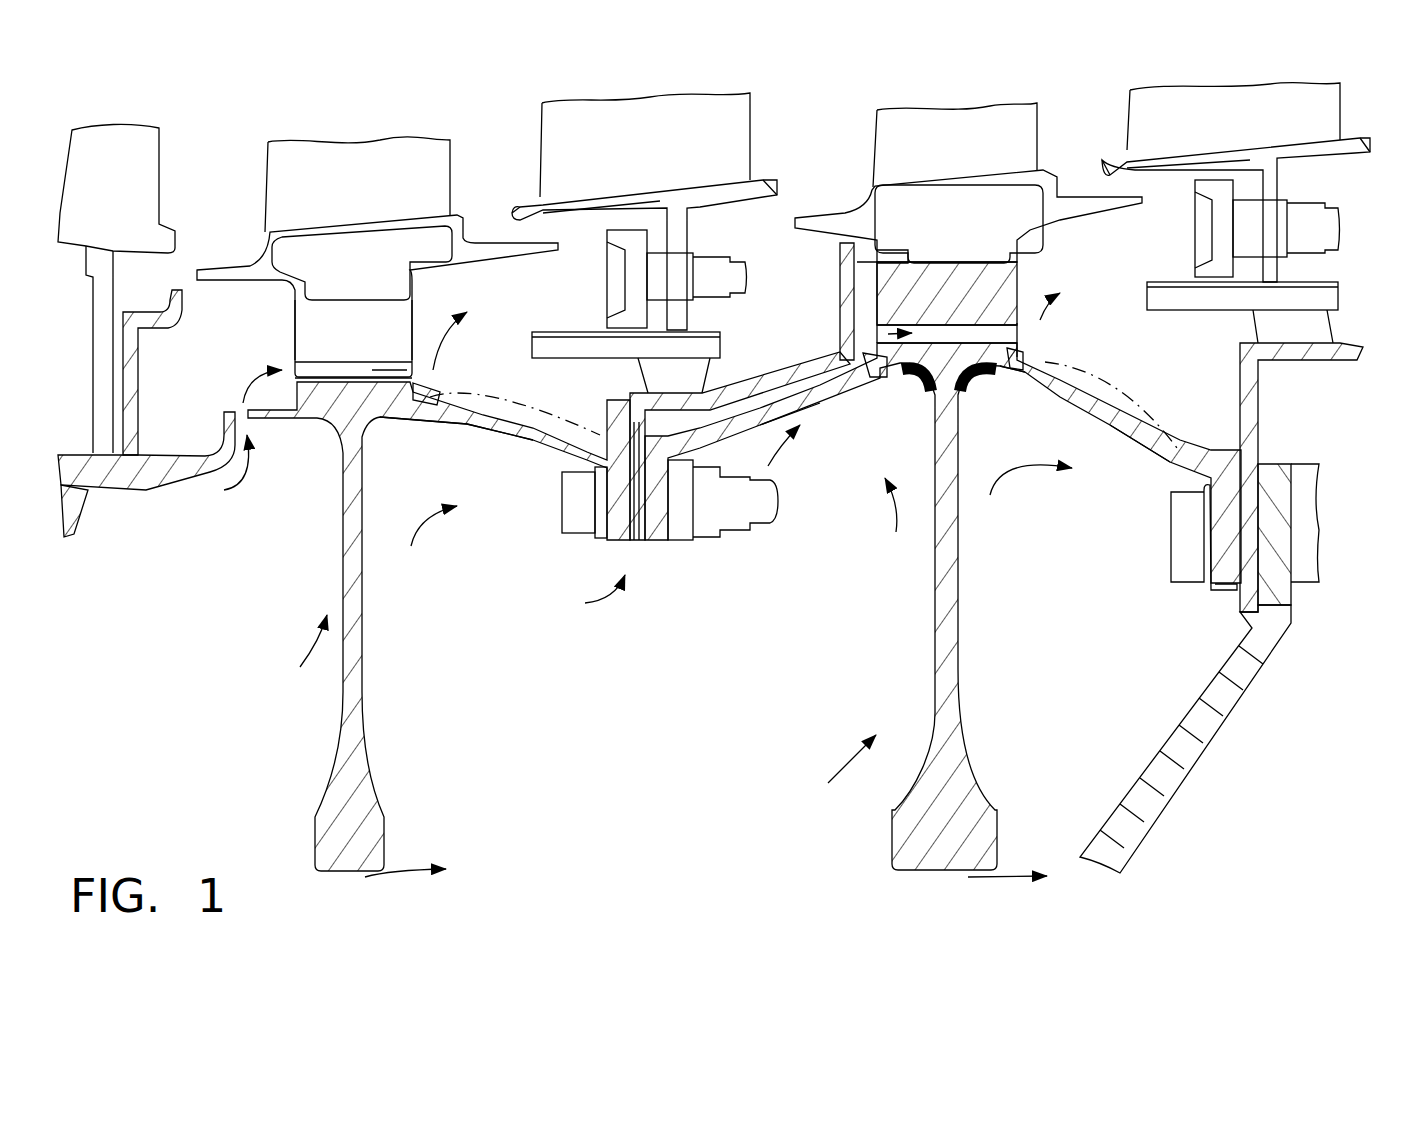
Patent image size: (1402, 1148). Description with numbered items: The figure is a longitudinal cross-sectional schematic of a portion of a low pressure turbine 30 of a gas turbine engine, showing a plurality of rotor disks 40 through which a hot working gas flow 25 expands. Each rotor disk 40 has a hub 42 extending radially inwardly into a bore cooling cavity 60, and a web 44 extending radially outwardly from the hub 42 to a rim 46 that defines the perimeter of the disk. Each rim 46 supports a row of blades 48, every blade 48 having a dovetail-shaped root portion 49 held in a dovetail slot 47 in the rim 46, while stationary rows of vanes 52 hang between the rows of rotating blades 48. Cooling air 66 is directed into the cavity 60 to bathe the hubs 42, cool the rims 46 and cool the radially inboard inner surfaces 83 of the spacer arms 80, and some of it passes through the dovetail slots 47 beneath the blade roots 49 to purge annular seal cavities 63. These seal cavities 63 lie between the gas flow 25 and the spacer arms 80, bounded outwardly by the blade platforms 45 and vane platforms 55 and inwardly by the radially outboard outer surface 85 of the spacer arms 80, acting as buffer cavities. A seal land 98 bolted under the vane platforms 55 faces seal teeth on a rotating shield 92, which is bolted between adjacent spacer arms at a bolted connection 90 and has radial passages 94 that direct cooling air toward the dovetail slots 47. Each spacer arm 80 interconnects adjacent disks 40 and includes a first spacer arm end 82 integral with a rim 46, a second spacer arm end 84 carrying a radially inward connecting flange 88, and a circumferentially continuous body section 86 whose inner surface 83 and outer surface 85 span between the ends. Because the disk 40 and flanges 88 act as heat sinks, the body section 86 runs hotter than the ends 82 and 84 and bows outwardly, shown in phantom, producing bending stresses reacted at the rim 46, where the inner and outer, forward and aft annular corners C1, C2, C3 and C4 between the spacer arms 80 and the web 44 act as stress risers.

The hot working gas flow 25 is at (525, 112).
The low pressure turbine 30 is at (225, 750).
The rotor disk 40 is at (384, 708).
The hub 42 is at (369, 827).
The web 44 is at (352, 621).
The blade platform 45 is at (482, 240).
The rim 46 is at (330, 445).
The dovetail slot 47 is at (347, 368).
The blade 48 is at (320, 199).
The dovetail-shaped root portion 49 is at (360, 339).
The vane 52 is at (92, 197).
The vane platform 55 is at (516, 208).
The bore cooling cavity 60 is at (646, 752).
The annular seal cavity 63 is at (510, 306).
The cooling air 66 is at (224, 490).
The spacer arm 80 is at (478, 386).
The first spacer arm end 82 is at (417, 395).
The radially inboard inner surface 83 is at (470, 424).
The second spacer arm end 84 is at (612, 440).
The radially outboard outer surface 85 is at (560, 404).
The spacer arm body section 86 is at (490, 430).
The connecting flange 88 is at (603, 543).
The bolted connection 90 is at (565, 520).
The rotating shield 92 is at (753, 390).
The radial passage 94 is at (637, 547).
The seal land 98 is at (697, 343).
The inner forward annular corner C1 is at (927, 385).
The outer forward annular corner C2 is at (875, 358).
The inner aft annular corner C3 is at (968, 400).
The outer aft annular corner C4 is at (1030, 352).